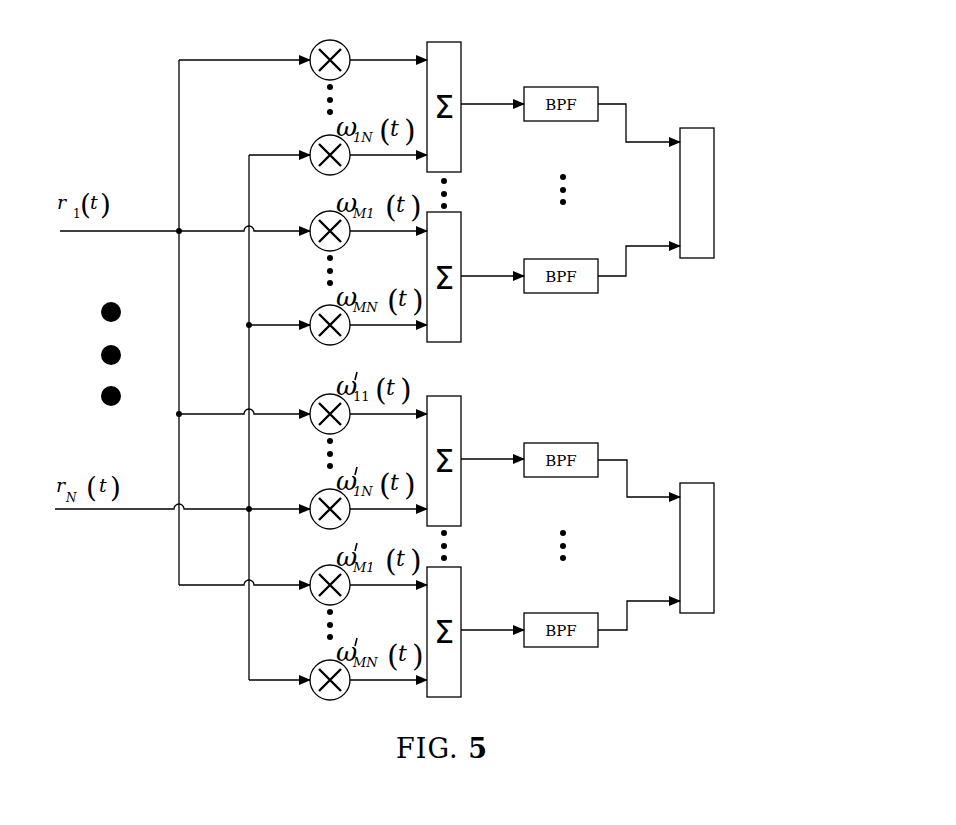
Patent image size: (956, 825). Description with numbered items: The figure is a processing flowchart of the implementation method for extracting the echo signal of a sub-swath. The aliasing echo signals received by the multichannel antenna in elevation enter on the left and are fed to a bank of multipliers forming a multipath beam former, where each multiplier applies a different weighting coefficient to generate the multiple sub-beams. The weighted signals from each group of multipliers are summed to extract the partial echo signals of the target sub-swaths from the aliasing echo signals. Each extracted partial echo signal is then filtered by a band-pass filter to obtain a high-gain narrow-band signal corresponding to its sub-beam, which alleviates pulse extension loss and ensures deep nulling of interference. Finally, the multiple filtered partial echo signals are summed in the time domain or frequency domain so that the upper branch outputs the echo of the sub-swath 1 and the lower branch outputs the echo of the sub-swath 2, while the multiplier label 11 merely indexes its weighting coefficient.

The sub-swath 1 is at (815, 192).
The sub-swath 2 is at (714, 547).
The multiplier for weight w11(t) 11 is at (361, 48).